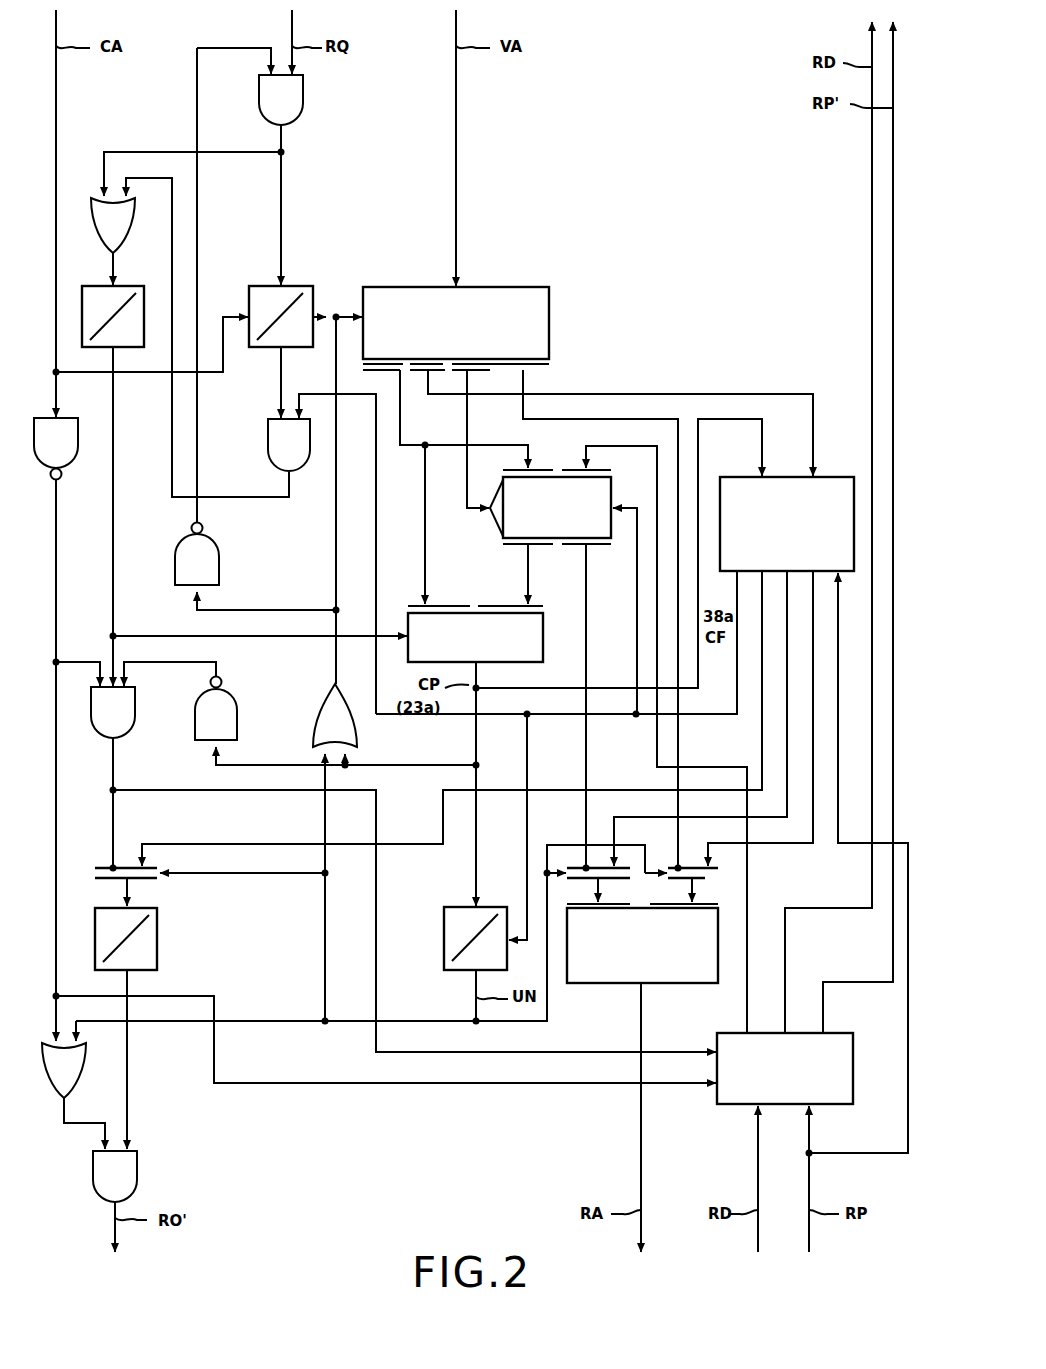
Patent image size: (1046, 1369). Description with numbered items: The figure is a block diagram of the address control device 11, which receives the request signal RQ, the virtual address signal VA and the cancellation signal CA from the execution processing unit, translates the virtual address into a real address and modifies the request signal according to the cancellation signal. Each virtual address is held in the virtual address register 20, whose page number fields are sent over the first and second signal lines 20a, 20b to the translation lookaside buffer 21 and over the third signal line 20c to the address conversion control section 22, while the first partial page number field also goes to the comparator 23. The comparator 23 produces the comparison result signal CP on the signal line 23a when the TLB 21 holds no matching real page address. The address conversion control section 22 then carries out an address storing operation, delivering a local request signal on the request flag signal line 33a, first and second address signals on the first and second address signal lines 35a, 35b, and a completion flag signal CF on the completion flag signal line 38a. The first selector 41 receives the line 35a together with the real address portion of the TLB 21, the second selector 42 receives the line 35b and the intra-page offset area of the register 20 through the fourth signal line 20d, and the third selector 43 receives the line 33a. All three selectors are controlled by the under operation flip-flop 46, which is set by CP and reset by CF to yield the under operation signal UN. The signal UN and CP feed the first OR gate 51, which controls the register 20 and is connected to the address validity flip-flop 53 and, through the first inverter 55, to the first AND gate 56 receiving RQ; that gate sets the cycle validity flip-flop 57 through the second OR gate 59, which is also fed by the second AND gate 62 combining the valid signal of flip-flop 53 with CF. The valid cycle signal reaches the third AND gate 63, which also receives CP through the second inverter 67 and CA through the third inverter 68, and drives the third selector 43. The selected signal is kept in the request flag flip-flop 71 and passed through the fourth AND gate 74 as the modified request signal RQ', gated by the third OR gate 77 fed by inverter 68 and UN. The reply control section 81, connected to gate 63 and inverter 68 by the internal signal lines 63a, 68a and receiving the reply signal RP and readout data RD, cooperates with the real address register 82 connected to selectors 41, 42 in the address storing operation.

The address control device 11 is at (680, 151).
The virtual address register 20 is at (505, 287).
The first signal line 20a is at (400, 408).
The second signal line 20b is at (467, 408).
The third signal line 20c is at (655, 393).
The fourth signal line 20d is at (523, 380).
The translation lookaside buffer 21 is at (611, 492).
The address conversion control section 22 is at (817, 470).
The comparator 23 is at (543, 632).
The signal line 23a is at (619, 553).
The request flag signal line 33a is at (762, 728).
The first address signal line 35a is at (787, 752).
The second address signal line 35b is at (790, 846).
The completion flag signal line 38a is at (727, 605).
The first selector 41 is at (608, 880).
The second selector 42 is at (702, 880).
The third selector 43 is at (148, 880).
The under operation flip-flop 46 is at (443, 940).
The first OR gate 51 is at (356, 728).
The address validity flip-flop 53 is at (294, 286).
The first inverter 55 is at (219, 570).
The first AND gate 56 is at (303, 100).
The cycle validity flip-flop 57 is at (128, 286).
The second OR gate 59 is at (93, 215).
The second AND gate 62 is at (306, 470).
The third AND gate 63 is at (134, 711).
The first internal signal line 63a is at (113, 763).
The second inverter 67 is at (237, 713).
The third inverter 68 is at (76, 462).
The second internal signal line 68a is at (56, 604).
The request flag flip-flop 71 is at (157, 938).
The fourth AND gate 74 is at (137, 1168).
The third OR gate 77 is at (48, 1094).
The reply control section 81 is at (733, 1104).
The real address register 82 is at (606, 985).